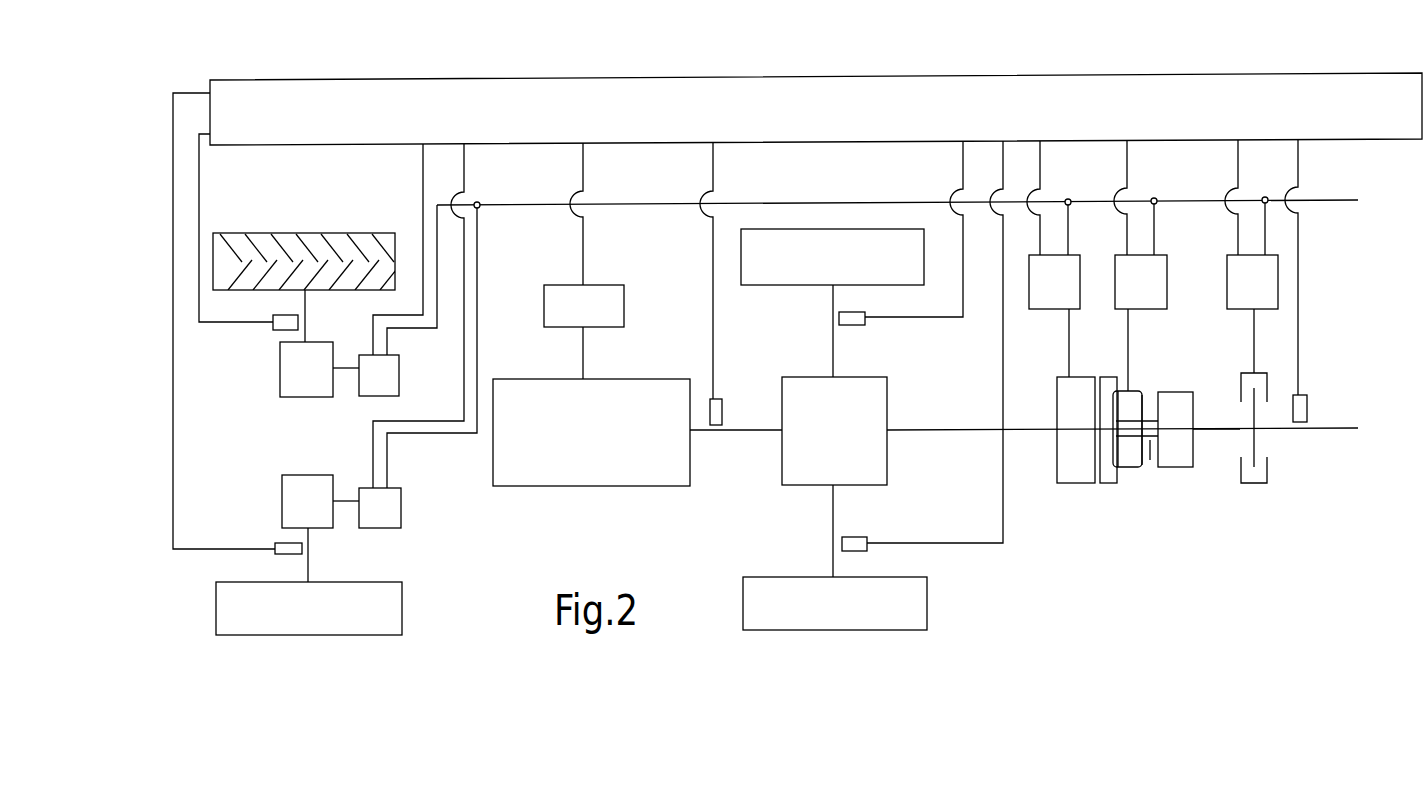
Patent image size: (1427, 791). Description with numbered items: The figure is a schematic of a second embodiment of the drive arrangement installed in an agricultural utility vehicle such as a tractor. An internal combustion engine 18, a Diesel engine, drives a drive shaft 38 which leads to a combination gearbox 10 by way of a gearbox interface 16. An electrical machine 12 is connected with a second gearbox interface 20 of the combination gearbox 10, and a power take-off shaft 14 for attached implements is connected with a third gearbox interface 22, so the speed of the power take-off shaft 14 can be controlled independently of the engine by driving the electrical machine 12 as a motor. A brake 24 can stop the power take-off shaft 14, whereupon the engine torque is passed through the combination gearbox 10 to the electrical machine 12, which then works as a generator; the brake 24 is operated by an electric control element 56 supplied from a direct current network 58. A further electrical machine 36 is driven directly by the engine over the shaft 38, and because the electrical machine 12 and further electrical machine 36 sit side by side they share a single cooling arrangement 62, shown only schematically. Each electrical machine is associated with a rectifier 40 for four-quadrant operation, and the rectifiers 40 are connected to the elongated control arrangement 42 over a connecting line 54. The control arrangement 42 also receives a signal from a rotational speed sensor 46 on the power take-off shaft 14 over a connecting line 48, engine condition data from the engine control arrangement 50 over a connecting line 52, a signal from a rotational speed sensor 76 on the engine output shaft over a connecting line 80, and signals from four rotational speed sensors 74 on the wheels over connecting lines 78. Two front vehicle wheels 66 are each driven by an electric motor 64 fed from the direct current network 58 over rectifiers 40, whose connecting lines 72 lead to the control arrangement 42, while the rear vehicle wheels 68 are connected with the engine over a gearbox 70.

The combination gearbox 10 is at (1164, 442).
The electrical machine 12 is at (1131, 470).
The power take-off shaft 14 is at (1327, 430).
The gearbox interface 16 is at (1144, 400).
The internal combustion engine 18 is at (579, 443).
The second gearbox interface 20 is at (1151, 458).
The third gearbox interface 22 is at (1197, 432).
The brake 24 is at (1237, 392).
The further electrical machine 36 is at (1064, 442).
The drive shaft 38 is at (742, 432).
The rectifier 40 is at (367, 387).
The control arrangement 42 is at (736, 121).
The rotational speed sensor 46 is at (1307, 408).
The connecting line 48 is at (1298, 305).
The control arrangement of the internal combustion engine 50 is at (571, 318).
The connecting line 52 is at (583, 170).
The connecting line 54 is at (1040, 165).
The electric control element 56 is at (1241, 297).
The direct current network 58 is at (1330, 200).
The cooling arrangement 62 is at (1108, 484).
The electric motor 64 is at (295, 381).
The vehicle wheels 66 is at (258, 233).
The vehicle wheels 68 is at (790, 285).
The gearbox 70 is at (823, 443).
The connecting lines 72 is at (423, 192).
The rotational speed sensors 74 is at (275, 330).
The rotational speed sensor 76 is at (722, 412).
The connecting lines 78 is at (207, 322).
The connecting line 80 is at (713, 248).